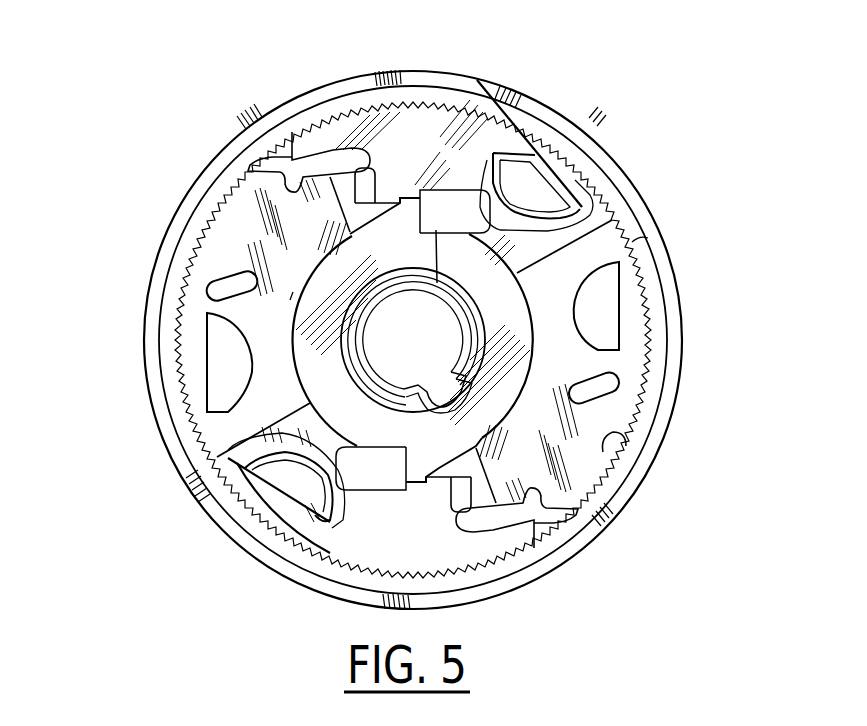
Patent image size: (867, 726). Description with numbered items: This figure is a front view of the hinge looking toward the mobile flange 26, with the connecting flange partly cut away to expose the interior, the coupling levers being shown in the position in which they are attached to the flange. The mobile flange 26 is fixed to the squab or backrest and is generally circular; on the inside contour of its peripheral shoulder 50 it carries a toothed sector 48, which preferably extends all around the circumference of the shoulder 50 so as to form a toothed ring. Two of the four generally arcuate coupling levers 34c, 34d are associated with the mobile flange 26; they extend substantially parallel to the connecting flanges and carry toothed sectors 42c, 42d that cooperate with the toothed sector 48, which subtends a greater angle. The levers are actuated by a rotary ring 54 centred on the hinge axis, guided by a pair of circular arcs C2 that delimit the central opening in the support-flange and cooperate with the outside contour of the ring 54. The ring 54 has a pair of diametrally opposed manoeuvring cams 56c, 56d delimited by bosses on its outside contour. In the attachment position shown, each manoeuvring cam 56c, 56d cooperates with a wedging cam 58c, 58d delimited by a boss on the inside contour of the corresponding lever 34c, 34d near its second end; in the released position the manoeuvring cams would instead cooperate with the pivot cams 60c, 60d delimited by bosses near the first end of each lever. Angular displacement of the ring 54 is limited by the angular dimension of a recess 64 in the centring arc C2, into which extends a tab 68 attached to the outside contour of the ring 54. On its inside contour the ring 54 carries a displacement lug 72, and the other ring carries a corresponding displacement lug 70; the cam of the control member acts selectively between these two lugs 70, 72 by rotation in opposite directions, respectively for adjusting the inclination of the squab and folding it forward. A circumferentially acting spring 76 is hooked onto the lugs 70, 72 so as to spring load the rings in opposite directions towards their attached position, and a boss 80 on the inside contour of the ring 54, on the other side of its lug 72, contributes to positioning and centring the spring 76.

The mobile flange 26 is at (243, 126).
The peripheral shoulder 50 is at (266, 116).
The toothed sector 48 is at (252, 168).
The manoeuvring cam 56c is at (400, 207).
The wedging cam 58c is at (405, 203).
The toothed sector 42c is at (437, 118).
The coupling lever 34c is at (478, 82).
The circumferentially acting spring 76 is at (478, 233).
The pivot cam 60c is at (472, 237).
The rotary ring 54 is at (503, 303).
The boss 80 is at (577, 360).
The recess 64 is at (290, 285).
The centring arc C2 is at (326, 262).
The tab 68 is at (302, 342).
The displacement lug 72 is at (400, 378).
The displacement lug 70 is at (455, 380).
The manoeuvring cam 56d is at (445, 462).
The wedging cam 58d is at (420, 480).
The pivot cam 60d is at (343, 480).
The coupling lever 34d is at (337, 533).
The toothed sector 42d is at (472, 565).